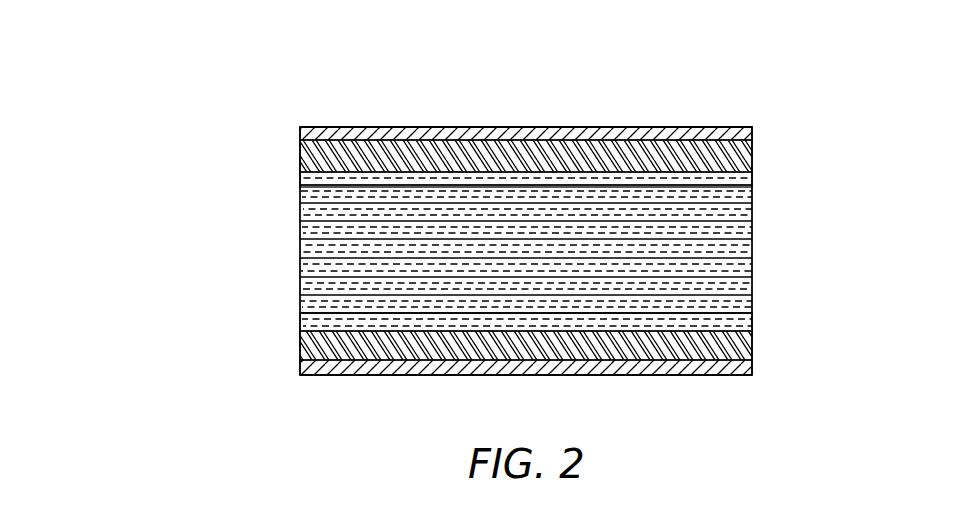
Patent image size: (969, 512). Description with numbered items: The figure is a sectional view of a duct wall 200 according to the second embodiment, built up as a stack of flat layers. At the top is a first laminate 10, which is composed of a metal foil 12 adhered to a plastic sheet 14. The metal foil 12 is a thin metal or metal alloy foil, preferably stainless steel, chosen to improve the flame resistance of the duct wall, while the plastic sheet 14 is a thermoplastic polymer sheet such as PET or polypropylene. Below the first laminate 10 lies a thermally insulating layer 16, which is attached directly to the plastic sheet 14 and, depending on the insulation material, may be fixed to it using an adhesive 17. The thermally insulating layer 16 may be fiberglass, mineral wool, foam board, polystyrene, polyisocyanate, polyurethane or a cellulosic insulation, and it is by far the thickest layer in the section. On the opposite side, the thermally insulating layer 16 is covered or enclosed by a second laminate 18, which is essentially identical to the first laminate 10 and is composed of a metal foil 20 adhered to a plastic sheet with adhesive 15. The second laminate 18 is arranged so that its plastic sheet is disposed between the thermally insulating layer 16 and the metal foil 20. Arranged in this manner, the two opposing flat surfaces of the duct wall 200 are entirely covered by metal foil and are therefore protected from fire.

The first laminate 10 is at (786, 140).
The metal foil 12 is at (300, 134).
The plastic sheet 14 is at (300, 155).
The adhesive 15 is at (753, 138).
The thermally insulating layer 16 is at (752, 232).
The adhesive 17 is at (752, 172).
The second laminate 18 is at (786, 349).
The metal foil 20 is at (300, 371).
The duct wall 200 is at (203, 302).